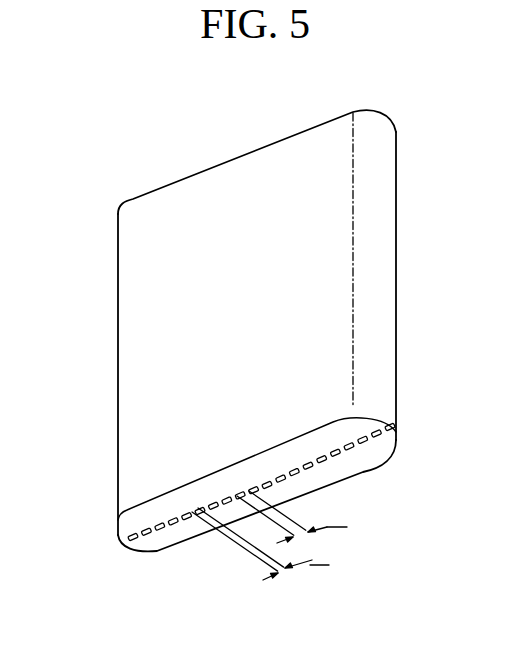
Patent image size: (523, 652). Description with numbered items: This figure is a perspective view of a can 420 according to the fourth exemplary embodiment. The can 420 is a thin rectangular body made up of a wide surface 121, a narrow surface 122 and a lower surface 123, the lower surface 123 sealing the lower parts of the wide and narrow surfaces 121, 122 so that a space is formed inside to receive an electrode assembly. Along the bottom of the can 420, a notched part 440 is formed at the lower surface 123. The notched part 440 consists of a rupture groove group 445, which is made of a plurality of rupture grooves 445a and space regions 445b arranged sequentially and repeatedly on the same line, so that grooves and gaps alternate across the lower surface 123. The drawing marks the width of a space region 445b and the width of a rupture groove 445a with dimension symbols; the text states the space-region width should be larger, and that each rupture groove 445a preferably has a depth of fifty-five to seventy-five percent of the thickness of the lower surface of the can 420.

The can 420 is at (70, 128).
The wide surface 121 is at (224, 173).
The narrow surface 122 is at (394, 241).
The lower surface 123 is at (190, 541).
The notched part 440 is at (393, 425).
The rupture groove group 445 is at (125, 540).
The rupture groove 445a is at (337, 458).
The space region 445b is at (345, 453).